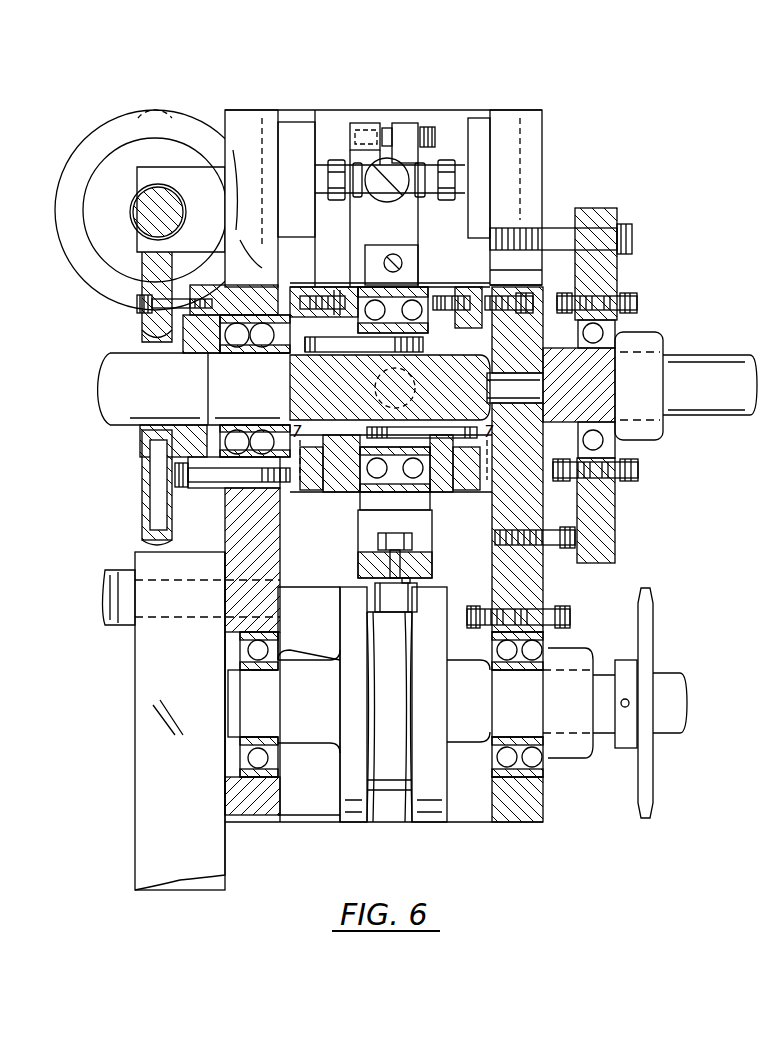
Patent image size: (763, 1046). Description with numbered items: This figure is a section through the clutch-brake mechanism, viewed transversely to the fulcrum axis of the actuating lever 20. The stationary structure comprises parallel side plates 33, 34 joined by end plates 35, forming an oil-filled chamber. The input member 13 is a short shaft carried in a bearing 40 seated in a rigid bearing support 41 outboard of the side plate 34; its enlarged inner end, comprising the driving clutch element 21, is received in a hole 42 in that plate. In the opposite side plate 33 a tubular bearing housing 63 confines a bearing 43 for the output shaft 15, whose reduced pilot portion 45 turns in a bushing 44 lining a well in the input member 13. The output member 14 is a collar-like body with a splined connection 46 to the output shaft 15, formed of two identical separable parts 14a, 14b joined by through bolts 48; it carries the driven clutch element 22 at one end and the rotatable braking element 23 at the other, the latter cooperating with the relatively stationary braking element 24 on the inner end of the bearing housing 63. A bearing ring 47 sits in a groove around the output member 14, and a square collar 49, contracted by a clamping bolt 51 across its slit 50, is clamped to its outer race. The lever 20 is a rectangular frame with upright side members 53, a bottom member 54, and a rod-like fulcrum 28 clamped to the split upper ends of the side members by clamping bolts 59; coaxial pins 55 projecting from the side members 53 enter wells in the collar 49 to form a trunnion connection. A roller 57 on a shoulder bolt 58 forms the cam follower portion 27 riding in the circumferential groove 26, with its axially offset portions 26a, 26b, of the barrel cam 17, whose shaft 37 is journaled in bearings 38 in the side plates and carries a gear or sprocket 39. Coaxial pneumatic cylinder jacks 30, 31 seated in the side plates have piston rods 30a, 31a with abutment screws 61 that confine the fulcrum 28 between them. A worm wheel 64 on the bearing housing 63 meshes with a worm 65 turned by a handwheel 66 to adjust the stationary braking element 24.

The input member 13 is at (546, 336).
The output member 14 is at (433, 276).
The output member body part 14a is at (340, 290).
The output member body part 14b is at (448, 286).
The output shaft 15 is at (250, 399).
The cam 17 is at (385, 808).
The actuating lever 20 is at (434, 556).
The driving clutch element 21 is at (500, 492).
The driven clutch element 22 is at (465, 485).
The braking element 23 is at (318, 492).
The relatively stationary braking element 24 is at (283, 487).
The circumferential groove 26 is at (402, 795).
The groove portion 26a is at (380, 627).
The groove portion 26b is at (370, 773).
The cam follower portion 27 is at (345, 598).
The fulcrum 28 is at (392, 165).
The pneumatic cylinder jack 30 is at (300, 114).
The piston rod 30a is at (322, 162).
The pneumatic cylinder jack 31 is at (480, 114).
The piston rod 31a is at (476, 115).
The side plate 33 is at (243, 815).
The side plate 34 is at (518, 810).
The end plate 35 is at (310, 817).
The cam shaft 37 is at (555, 737).
The bearing 38 is at (256, 772).
The gear or sprocket 39 is at (658, 628).
The bearing 40 is at (603, 332).
The bearing support 41 is at (600, 218).
The hole 42 is at (545, 275).
The bearing 43 is at (257, 455).
The bushing 44 is at (579, 402).
The pilot portion 45 is at (528, 393).
The splined connection 46 is at (437, 357).
The bearing ring 47 is at (388, 486).
The through bolts 48 is at (390, 387).
The collar 49 is at (387, 506).
The slit 50 is at (373, 253).
The clamping bolt 51 is at (398, 258).
The side members 53 is at (363, 123).
The bottom member 54 is at (435, 568).
The pins 55 is at (422, 398).
The roller 57 is at (407, 600).
The shoulder bolt 58 is at (392, 563).
The clamping bolt 59 is at (428, 127).
The abutment screw 61 is at (415, 200).
The bearing housing 63 is at (247, 297).
The worm wheel 64 is at (137, 267).
The worm 65 is at (140, 228).
The handwheel 66 is at (98, 132).